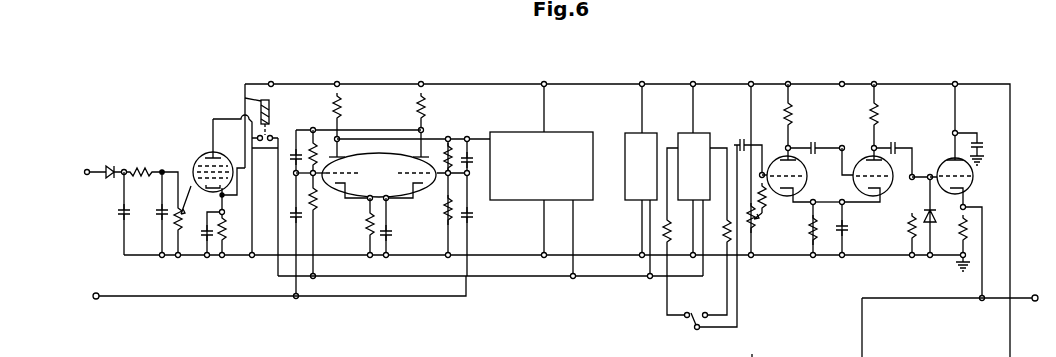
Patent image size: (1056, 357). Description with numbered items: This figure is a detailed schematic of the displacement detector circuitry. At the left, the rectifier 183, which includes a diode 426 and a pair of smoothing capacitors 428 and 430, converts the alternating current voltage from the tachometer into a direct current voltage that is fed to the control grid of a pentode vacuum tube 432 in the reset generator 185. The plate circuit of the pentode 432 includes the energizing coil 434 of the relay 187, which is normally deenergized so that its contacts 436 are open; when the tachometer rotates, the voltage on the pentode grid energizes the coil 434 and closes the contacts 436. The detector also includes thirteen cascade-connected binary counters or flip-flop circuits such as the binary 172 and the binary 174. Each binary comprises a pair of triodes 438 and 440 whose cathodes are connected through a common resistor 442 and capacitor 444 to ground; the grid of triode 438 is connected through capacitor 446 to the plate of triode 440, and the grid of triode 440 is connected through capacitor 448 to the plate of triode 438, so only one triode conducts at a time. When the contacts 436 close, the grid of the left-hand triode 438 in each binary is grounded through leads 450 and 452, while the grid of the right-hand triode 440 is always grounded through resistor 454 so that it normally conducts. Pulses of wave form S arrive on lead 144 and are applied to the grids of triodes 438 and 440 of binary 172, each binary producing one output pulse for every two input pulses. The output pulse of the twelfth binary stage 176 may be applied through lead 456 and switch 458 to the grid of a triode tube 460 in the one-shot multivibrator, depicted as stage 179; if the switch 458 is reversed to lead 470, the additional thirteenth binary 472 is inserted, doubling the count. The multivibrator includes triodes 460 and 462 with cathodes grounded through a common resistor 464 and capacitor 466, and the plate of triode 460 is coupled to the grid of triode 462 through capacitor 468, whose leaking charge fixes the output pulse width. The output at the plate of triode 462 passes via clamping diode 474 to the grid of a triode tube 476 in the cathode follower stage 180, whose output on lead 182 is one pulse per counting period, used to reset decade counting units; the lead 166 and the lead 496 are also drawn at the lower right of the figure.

The rectifier 183 is at (135, 151).
The diode 426 is at (108, 178).
The smoothing capacitor 428 is at (121, 213).
The smoothing capacitor 430 is at (149, 215).
The pentode vacuum tube 432 is at (203, 155).
The energizing coil 434 is at (244, 99).
The contacts 436 is at (243, 120).
The lead 452 is at (250, 243).
The reset generator 185 is at (284, 75).
The relay 187 is at (271, 104).
The binary 172 is at (365, 75).
The capacitor 446 is at (314, 194).
The triode 438 is at (343, 158).
The triode 440 is at (413, 187).
The common resistor 442 is at (367, 230).
The capacitor 444 is at (393, 238).
The capacitor 448 is at (469, 150).
The resistor 454 is at (443, 208).
The lead 450 is at (363, 279).
The lead 144 is at (375, 298).
The binary 174 is at (535, 75).
The twelfth binary stage 176 is at (631, 172).
The thirteenth binary 472 is at (684, 172).
The lead 456 is at (666, 316).
The switch 458 is at (692, 322).
The lead 470 is at (727, 302).
The flip-flop stage 179 is at (813, 75).
The triode tube 460 is at (787, 152).
The triode 462 is at (879, 171).
The common resistor 464 is at (811, 232).
The capacitor 466 is at (846, 232).
The capacitor 468 is at (803, 136).
The clamping diode 474 is at (928, 224).
The cathode follower stage 180 is at (951, 75).
The triode tube 476 is at (968, 183).
The lead 182 is at (863, 322).
The conductor 166 is at (900, 356).
The conductor 496 is at (752, 354).